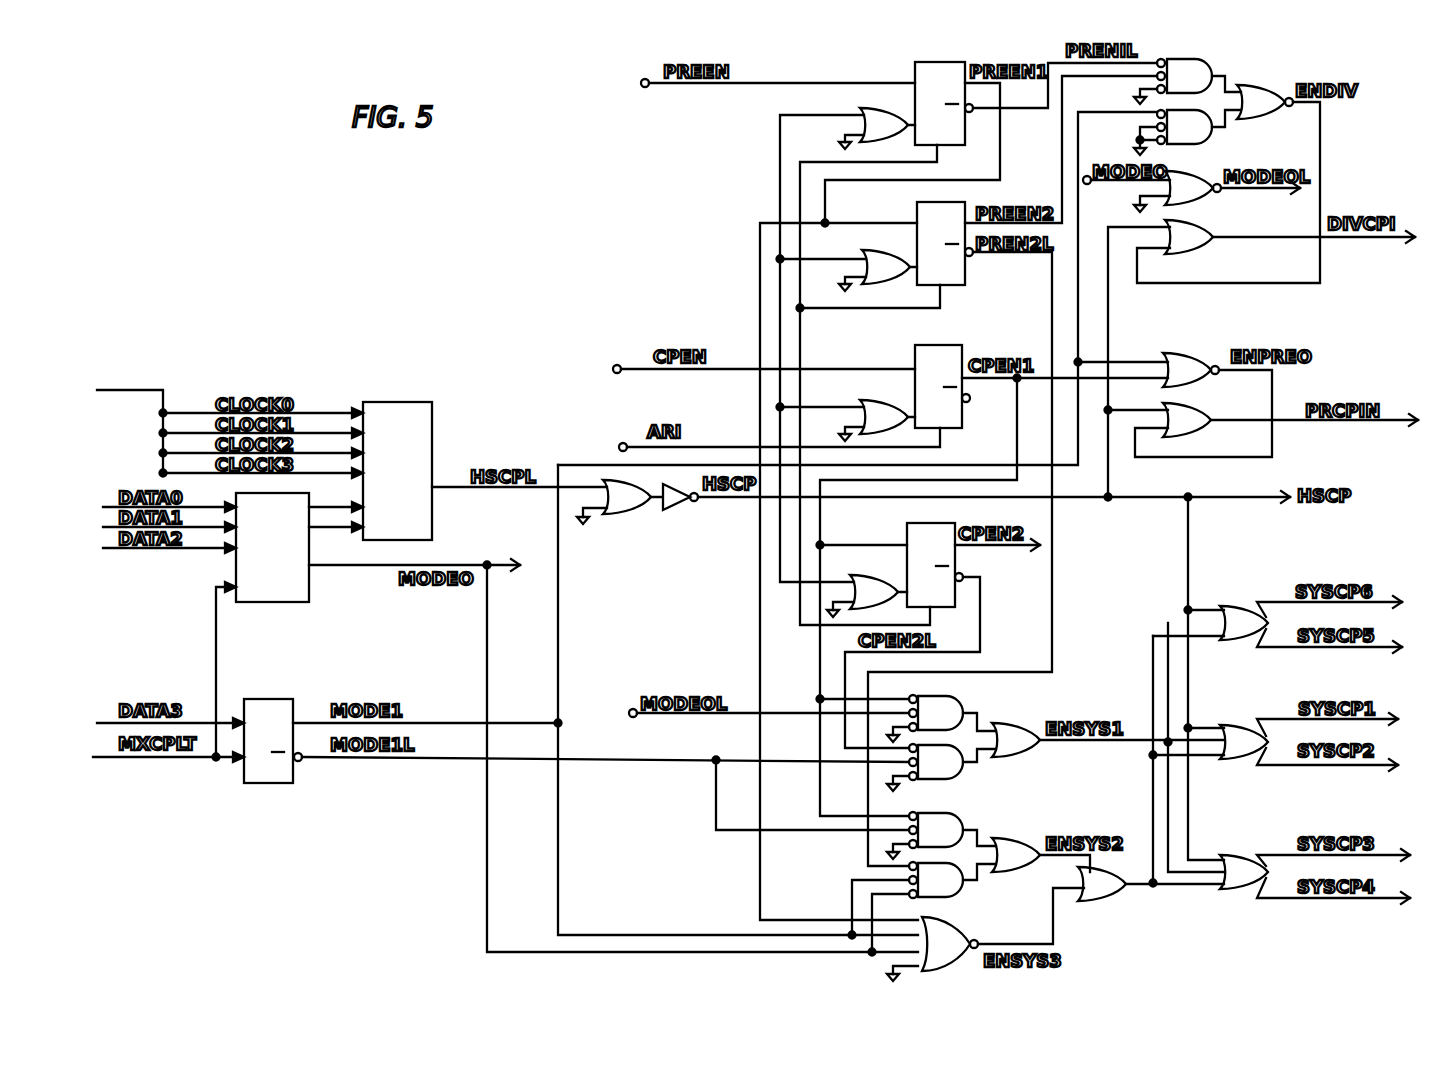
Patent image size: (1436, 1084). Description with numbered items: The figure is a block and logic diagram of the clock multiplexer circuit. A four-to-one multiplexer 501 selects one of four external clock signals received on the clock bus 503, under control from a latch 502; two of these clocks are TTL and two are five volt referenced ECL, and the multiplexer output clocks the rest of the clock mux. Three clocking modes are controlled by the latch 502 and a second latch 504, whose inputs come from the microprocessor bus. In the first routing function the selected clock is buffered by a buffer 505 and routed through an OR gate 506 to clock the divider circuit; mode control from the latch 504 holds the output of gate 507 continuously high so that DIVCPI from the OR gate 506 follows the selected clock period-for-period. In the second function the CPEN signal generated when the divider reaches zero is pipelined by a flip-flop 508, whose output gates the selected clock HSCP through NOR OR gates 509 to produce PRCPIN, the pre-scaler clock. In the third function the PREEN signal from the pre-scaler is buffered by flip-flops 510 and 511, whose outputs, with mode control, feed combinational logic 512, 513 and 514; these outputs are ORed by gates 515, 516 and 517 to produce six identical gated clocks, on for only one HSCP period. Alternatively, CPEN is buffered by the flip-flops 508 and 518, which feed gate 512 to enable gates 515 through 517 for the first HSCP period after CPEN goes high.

The four-to-one multiplexer 501 is at (378, 400).
The latch 502 is at (295, 604).
The clock bus 503 is at (153, 422).
The latch 504 is at (283, 786).
The buffer 505 is at (658, 523).
The OR gate 506 is at (1205, 228).
The gate 507 is at (1250, 66).
The flip-flop 508 is at (913, 352).
The NOR OR gates 509 is at (1218, 338).
The flip-flop 510 is at (915, 65).
The flip-flop 511 is at (917, 210).
The combinational logic 512 is at (992, 699).
The combinational logic 513 is at (992, 804).
The combinational logic 514 is at (960, 926).
The OR gate 515 is at (1233, 604).
The OR gate 516 is at (1242, 722).
The OR gate 517 is at (1240, 855).
The flip-flop 518 is at (905, 533).